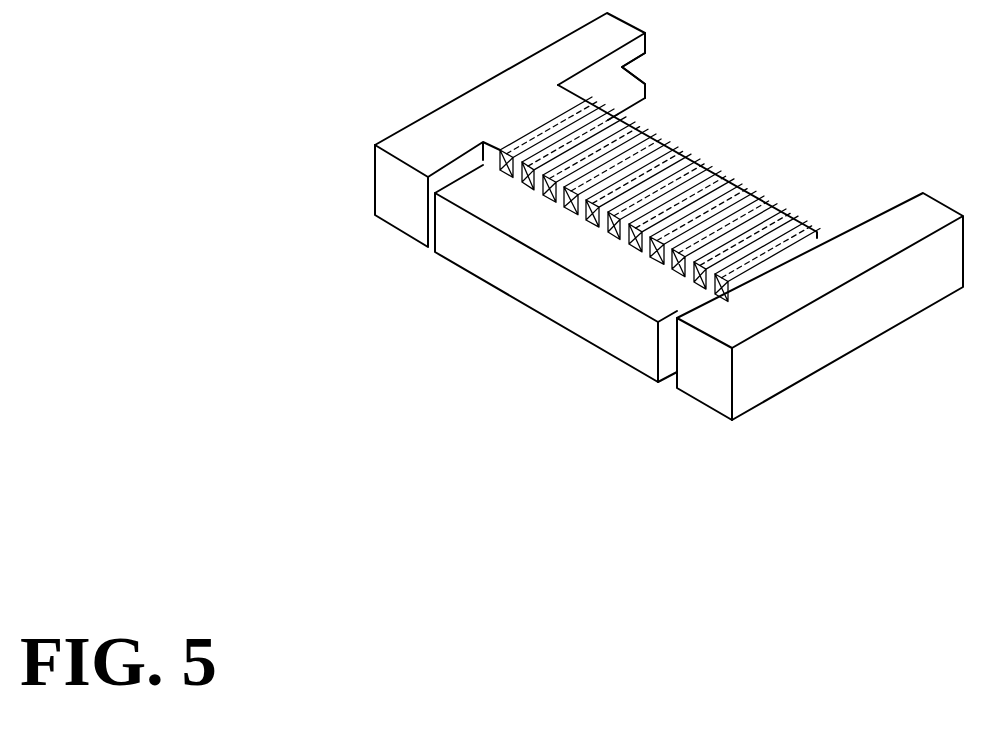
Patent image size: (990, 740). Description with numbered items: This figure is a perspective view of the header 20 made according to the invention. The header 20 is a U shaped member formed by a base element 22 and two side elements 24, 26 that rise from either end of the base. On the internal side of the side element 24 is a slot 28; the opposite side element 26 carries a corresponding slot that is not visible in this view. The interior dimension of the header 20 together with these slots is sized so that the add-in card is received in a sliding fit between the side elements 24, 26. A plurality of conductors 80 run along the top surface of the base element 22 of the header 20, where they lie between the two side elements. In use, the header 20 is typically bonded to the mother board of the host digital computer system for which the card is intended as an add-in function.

The header 20 is at (548, 345).
The base element 22 is at (626, 233).
The side element 24 is at (498, 72).
The side element 26 is at (906, 300).
The slot 28 is at (640, 77).
The conductors 80 is at (660, 137).